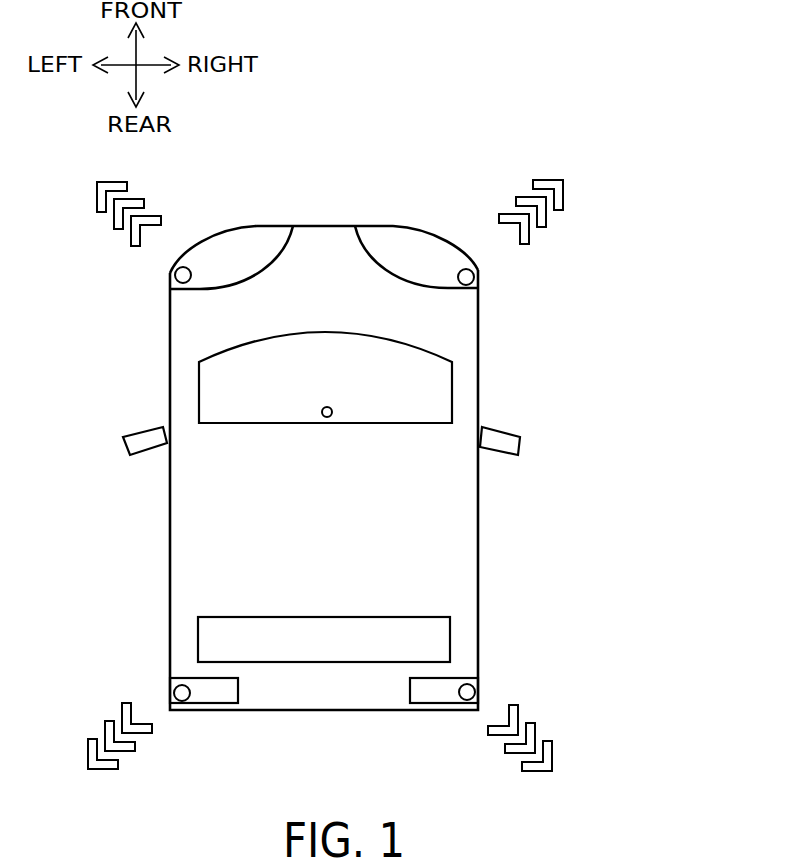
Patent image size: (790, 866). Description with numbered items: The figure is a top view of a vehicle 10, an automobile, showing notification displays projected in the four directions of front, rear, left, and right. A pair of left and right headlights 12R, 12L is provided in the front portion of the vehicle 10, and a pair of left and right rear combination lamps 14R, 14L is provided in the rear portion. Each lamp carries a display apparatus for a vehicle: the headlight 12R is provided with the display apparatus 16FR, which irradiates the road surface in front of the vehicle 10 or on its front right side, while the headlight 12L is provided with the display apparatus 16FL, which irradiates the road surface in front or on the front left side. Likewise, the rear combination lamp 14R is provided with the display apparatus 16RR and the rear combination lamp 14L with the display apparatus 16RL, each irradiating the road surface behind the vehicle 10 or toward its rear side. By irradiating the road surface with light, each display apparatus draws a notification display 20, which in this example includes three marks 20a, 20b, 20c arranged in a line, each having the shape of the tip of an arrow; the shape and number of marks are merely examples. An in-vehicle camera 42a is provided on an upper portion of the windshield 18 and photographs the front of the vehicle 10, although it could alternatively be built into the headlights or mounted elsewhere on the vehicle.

The vehicle 10 is at (341, 136).
The left headlight 12L is at (236, 226).
The right headlight 12R is at (402, 223).
The left rear combination lamp 14L is at (220, 703).
The right rear combination lamp 14R is at (427, 703).
The display apparatus for a vehicle 16FL is at (172, 273).
The display apparatus for a vehicle 16FR is at (480, 287).
The display apparatus for a vehicle 16RL is at (172, 690).
The display apparatus for a vehicle 16RR is at (478, 684).
The windshield 18 is at (199, 380).
The notification display 20 is at (139, 188).
The mark 20a is at (566, 201).
The mark 20b is at (549, 220).
The mark 20c is at (531, 243).
The in-vehicle camera 42a is at (333, 410).